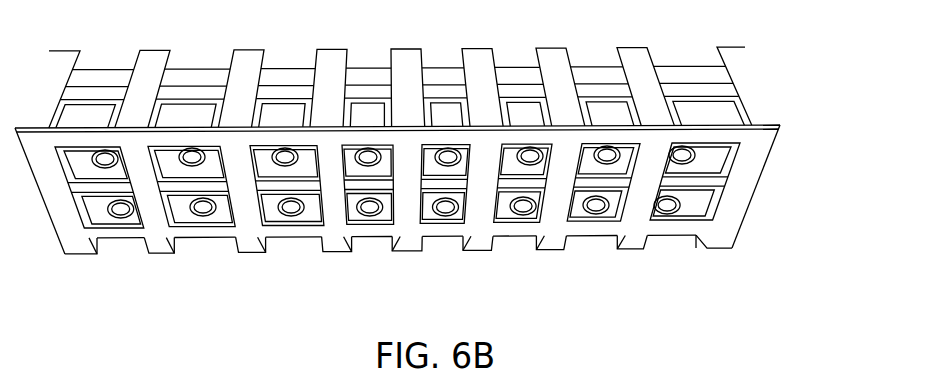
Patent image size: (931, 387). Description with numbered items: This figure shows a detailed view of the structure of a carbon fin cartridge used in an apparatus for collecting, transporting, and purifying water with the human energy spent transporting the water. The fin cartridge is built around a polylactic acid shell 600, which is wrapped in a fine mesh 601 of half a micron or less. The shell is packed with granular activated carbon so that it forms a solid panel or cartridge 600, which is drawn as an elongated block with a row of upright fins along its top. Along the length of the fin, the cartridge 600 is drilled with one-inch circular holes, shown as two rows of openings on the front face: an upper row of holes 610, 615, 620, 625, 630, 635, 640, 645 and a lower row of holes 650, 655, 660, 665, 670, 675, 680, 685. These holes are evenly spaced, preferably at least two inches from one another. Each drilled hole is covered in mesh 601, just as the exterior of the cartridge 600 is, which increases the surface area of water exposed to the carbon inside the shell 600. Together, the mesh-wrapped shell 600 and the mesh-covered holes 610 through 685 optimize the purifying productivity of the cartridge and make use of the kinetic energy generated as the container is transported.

The polylactic acid shell 600 is at (768, 152).
The mesh 601 is at (630, 252).
The circular hole 610 is at (105, 159).
The circular hole 615 is at (192, 157).
The circular hole 620 is at (285, 157).
The circular hole 625 is at (368, 157).
The circular hole 630 is at (448, 157).
The circular hole 635 is at (530, 156).
The circular hole 640 is at (607, 155).
The circular hole 645 is at (682, 155).
The circular hole 650 is at (121, 209).
The circular hole 655 is at (203, 207).
The circular hole 660 is at (291, 207).
The circular hole 665 is at (370, 207).
The circular hole 670 is at (446, 207).
The circular hole 675 is at (523, 206).
The circular hole 680 is at (596, 205).
The circular hole 685 is at (667, 205).